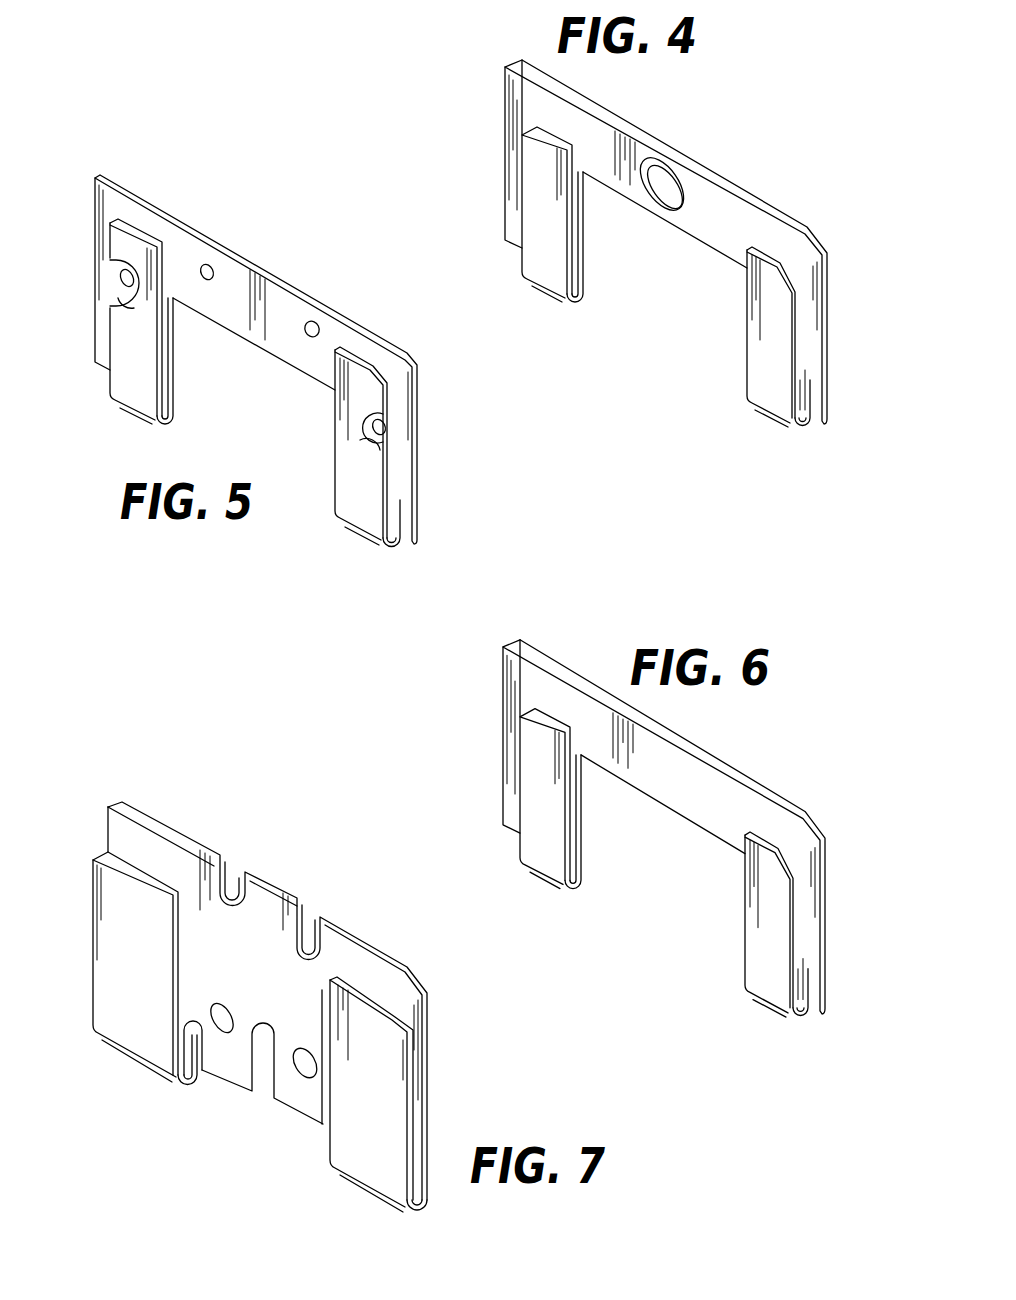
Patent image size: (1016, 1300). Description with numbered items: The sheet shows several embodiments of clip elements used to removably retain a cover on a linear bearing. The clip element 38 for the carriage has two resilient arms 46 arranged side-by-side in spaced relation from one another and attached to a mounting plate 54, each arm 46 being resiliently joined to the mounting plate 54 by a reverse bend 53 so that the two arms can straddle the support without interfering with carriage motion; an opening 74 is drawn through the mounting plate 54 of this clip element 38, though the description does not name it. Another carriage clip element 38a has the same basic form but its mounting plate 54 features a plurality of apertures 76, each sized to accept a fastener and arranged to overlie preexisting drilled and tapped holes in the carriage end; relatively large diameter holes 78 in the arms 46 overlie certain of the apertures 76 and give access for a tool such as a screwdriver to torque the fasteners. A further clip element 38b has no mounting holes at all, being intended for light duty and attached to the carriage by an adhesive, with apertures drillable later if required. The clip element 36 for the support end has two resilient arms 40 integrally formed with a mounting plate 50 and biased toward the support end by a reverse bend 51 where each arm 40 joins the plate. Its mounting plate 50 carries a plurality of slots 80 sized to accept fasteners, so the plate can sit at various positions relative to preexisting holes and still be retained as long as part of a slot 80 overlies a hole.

In FIG. 7, the clip element 36 is at (286, 1026).
In FIG. 4, the clip element 38 is at (680, 277).
In FIG. 5, the clip element 38a is at (261, 387).
In FIG. 6, the clip element 38b is at (687, 863).
In FIG. 7, the resilient arm 40 is at (127, 1030).
In FIG. 4, the resilient arm 46 is at (538, 250).
In FIG. 5, the resilient arm 46 is at (130, 388).
In FIG. 6, the resilient arm 46 is at (763, 977).
In FIG. 7, the mounting plate 50 is at (427, 1023).
In FIG. 7, the reverse bend 51 is at (180, 1085).
In FIG. 4, the reverse bend 53 is at (571, 303).
In FIG. 5, the reverse bend 53 is at (393, 545).
In FIG. 6, the reverse bend 53 is at (802, 1018).
In FIG. 4, the mounting plate 54 is at (805, 252).
In FIG. 5, the mounting plate 54 is at (345, 332).
In FIG. 6, the mounting plate 54 is at (802, 833).
In FIG. 4, the aperture 74 is at (663, 200).
In FIG. 5, the aperture 76 is at (210, 262).
In FIG. 5, the hole 78 is at (113, 300).
In FIG. 7, the slot 80 is at (307, 905).